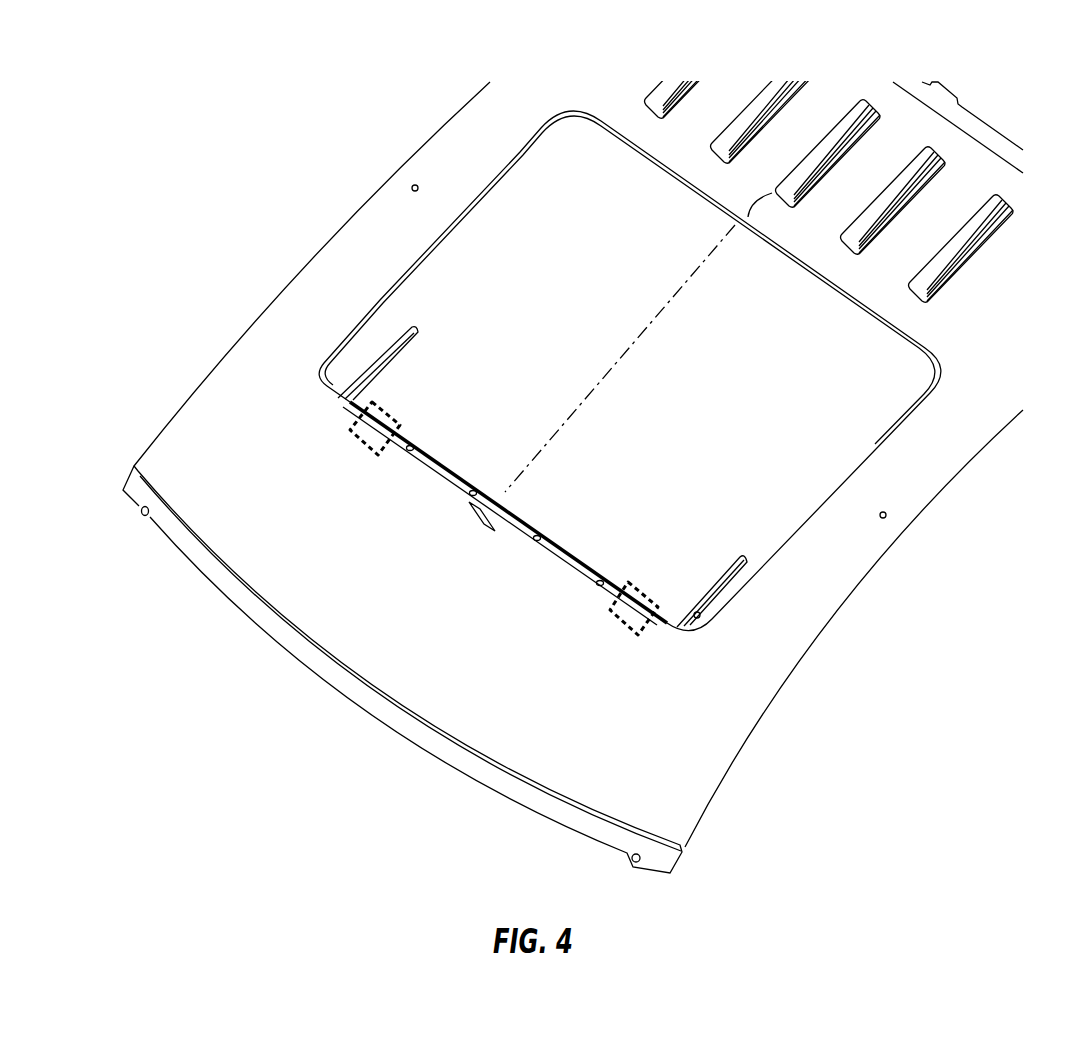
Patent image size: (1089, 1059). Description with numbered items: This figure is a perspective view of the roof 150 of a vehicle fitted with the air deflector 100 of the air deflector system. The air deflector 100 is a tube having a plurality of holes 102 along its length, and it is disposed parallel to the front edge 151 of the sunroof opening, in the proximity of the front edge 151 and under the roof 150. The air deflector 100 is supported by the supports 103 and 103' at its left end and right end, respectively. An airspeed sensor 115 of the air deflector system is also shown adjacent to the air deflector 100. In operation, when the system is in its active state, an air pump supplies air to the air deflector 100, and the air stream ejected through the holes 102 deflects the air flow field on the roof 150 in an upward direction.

The roof 150 is at (258, 294).
The air deflector 100 is at (568, 539).
The front edge 151 is at (432, 477).
The holes 102 is at (538, 540).
The airspeed sensor 115 is at (482, 530).
The support 103' is at (375, 455).
The support 103 is at (632, 634).